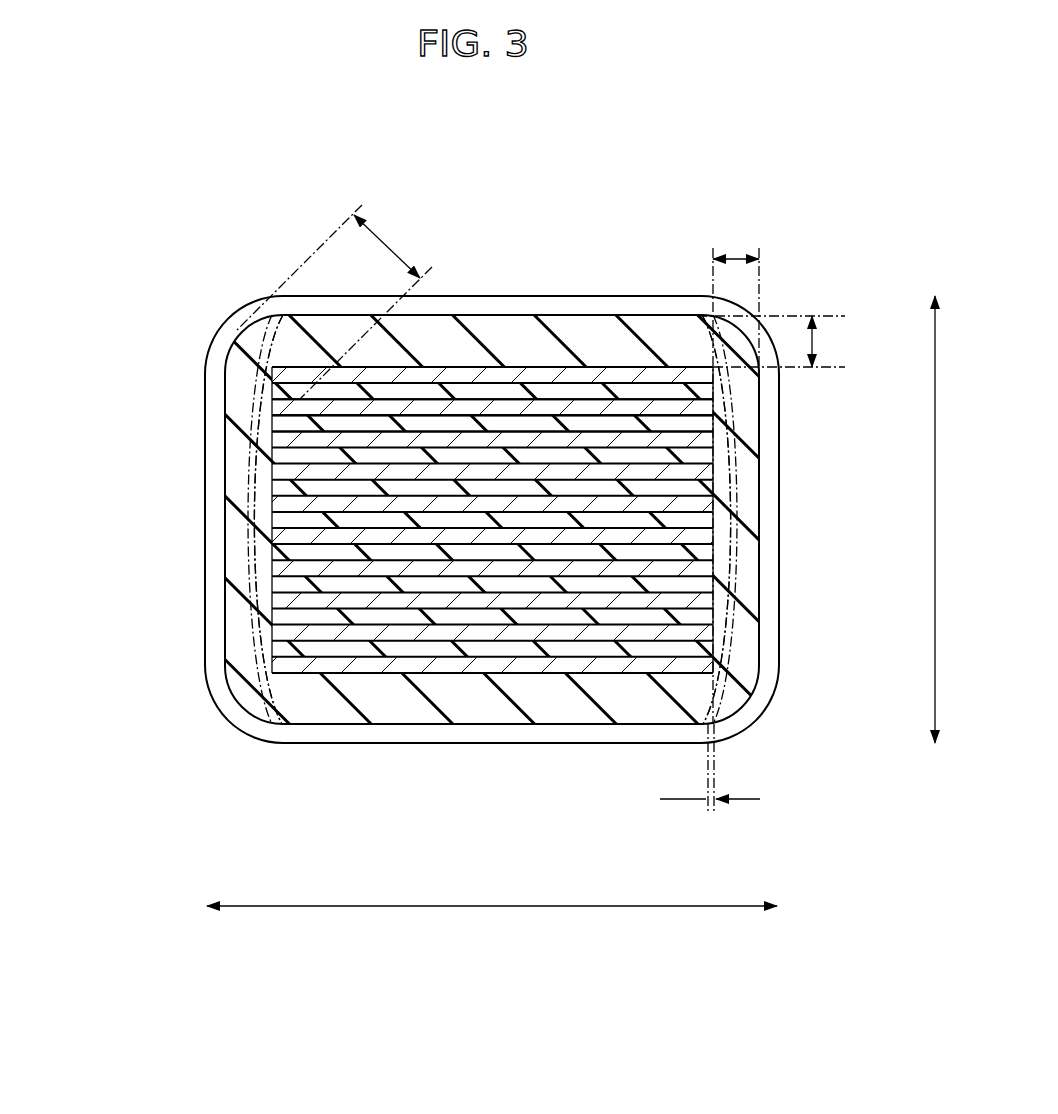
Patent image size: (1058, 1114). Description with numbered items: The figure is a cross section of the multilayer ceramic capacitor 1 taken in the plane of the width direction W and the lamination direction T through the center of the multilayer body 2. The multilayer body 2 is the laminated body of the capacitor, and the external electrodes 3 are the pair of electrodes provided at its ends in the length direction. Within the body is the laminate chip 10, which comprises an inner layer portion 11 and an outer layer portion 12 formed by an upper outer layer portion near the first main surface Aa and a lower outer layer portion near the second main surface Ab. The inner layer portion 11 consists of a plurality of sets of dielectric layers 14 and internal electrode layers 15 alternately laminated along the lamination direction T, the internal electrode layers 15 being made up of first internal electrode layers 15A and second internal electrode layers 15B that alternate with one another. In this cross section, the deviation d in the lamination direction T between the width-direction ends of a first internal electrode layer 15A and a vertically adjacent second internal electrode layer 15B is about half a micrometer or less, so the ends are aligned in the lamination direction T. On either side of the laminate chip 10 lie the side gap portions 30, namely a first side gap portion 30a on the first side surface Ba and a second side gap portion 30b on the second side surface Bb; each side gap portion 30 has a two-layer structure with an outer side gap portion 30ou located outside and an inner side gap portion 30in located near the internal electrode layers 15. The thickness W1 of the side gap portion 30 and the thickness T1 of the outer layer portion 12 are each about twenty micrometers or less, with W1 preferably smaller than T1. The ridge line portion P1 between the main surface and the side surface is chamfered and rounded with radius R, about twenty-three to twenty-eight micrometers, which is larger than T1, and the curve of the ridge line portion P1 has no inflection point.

The multilayer ceramic capacitor 1 is at (797, 253).
The multilayer body 2 is at (620, 315).
The external electrodes 3 is at (612, 746).
The laminate chip 10 is at (662, 297).
The inner layer portion 11 is at (272, 672).
The outer layer portion 12 is at (480, 340).
The dielectric layers 14 is at (277, 425).
The internal electrode layers 15 is at (140, 377).
The first internal electrode layers 15A is at (272, 378).
The second internal electrode layers 15B is at (277, 408).
The side gap portions 30 is at (115, 700).
The first side gap portion 30a is at (167, 537).
The second side gap portion 30b is at (813, 519).
The inner side gap portion 30in is at (273, 695).
The outer side gap portion 30ou is at (245, 687).
The first main surface Aa is at (577, 313).
The second main surface Ab is at (570, 727).
The first side surface Ba is at (223, 607).
The second side surface Bb is at (762, 607).
The ridge line portion P1 is at (230, 322).
The R of the chamfered portion R is at (334, 302).
The lamination direction T is at (948, 519).
The thickness of the outer layer portion T1 is at (775, 341).
The width direction W is at (492, 926).
The thickness of the side gap portion W1 is at (736, 473).
The deviation d is at (710, 783).